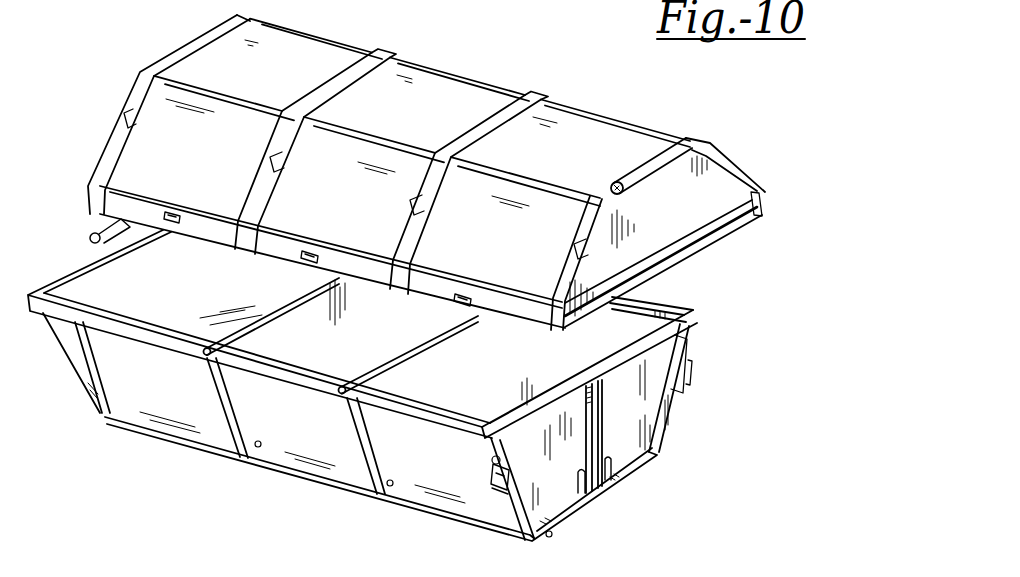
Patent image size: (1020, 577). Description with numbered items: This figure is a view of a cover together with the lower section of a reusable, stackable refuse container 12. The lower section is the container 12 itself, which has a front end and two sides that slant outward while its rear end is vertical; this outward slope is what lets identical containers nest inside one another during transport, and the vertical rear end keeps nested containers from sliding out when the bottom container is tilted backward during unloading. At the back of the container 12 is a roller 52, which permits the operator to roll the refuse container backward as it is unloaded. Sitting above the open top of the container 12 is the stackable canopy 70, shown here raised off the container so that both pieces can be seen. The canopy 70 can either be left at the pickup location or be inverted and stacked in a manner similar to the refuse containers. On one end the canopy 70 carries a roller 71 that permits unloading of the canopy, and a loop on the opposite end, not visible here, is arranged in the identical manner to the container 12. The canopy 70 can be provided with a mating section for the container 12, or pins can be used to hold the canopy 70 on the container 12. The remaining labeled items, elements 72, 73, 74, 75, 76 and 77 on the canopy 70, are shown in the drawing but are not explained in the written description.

The refuse container 12 is at (320, 483).
The roller 52 is at (598, 502).
The stackable canopy 70 is at (578, 106).
The roller 71 is at (653, 158).
The first lid panel 72 is at (224, 136).
The second lid panel 73 is at (361, 184).
The third lid panel 74 is at (512, 222).
The first latch 75 is at (170, 212).
The second latch 76 is at (313, 250).
The third latch 77 is at (465, 292).